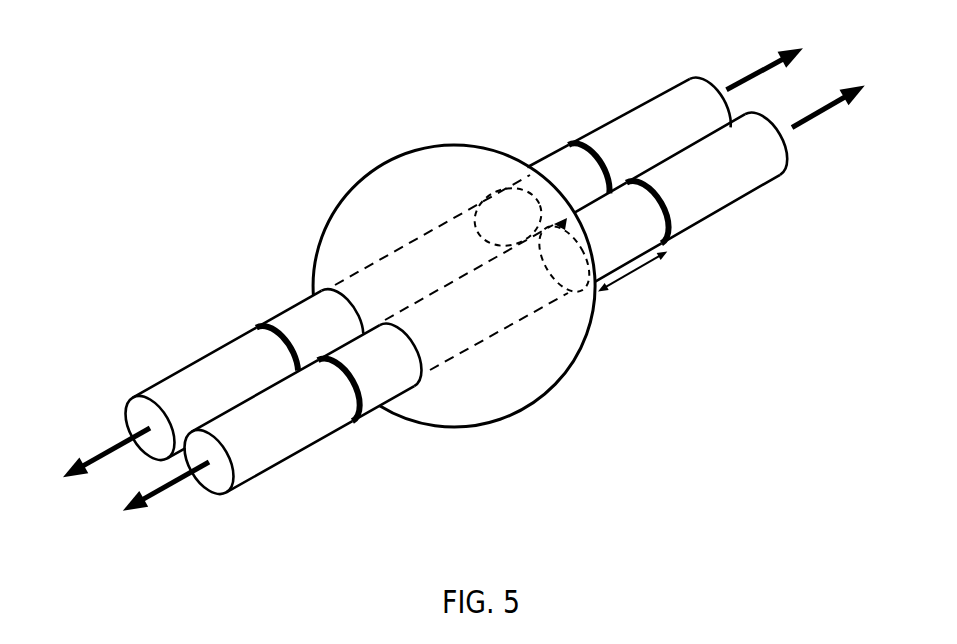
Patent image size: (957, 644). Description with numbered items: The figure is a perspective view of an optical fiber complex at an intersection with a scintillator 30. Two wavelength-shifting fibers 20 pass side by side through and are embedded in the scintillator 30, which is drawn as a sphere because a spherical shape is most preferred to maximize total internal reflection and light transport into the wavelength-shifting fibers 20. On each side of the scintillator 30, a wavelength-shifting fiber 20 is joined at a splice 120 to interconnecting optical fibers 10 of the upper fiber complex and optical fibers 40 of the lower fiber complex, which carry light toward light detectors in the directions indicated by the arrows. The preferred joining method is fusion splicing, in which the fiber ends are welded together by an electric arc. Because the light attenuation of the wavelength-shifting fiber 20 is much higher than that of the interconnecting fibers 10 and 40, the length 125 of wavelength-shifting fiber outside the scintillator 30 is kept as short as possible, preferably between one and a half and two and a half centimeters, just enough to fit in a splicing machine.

The optical fibers 10 is at (168, 398).
The wavelength-shifting fibers 20 is at (300, 333).
The scintillator 30 is at (417, 185).
The optical fibers 40 is at (257, 458).
The splice 120 is at (573, 142).
The length outside of the scintillator 125 is at (628, 277).